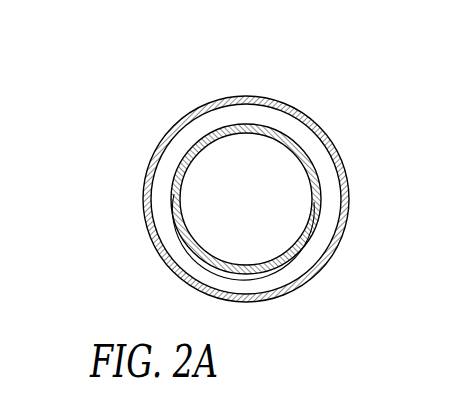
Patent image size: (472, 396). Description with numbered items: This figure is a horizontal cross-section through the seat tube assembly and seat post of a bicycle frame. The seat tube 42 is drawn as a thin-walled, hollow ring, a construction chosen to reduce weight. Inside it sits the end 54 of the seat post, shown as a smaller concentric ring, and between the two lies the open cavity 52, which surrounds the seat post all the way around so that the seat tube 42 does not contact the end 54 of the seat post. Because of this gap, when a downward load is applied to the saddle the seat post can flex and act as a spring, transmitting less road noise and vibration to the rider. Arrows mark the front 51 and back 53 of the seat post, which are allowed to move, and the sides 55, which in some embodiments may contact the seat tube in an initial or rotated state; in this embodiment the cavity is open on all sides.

The seat tube 42 is at (252, 187).
The front of the seat post 51 is at (332, 199).
The open cavity 52 is at (307, 255).
The back of the seat post 53 is at (160, 199).
The end of the seat post 54 is at (257, 127).
The sides of the seat post 55 is at (246, 114).